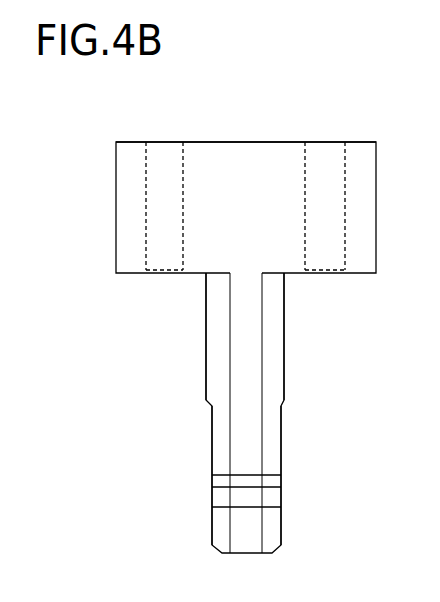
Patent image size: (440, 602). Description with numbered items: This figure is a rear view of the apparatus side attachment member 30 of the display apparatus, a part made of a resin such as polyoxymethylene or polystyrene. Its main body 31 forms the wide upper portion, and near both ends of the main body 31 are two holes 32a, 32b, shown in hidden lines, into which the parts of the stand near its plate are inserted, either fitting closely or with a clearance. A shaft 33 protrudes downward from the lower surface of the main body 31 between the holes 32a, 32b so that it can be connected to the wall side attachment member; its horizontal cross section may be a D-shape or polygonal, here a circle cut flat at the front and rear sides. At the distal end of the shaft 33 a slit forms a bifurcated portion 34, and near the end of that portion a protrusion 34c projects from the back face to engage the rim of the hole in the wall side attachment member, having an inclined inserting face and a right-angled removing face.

The apparatus side attachment member 30 is at (126, 133).
The main body 31 is at (243, 141).
The hole 32a is at (163, 258).
The hole 32b is at (324, 258).
The shaft 33 is at (287, 353).
The bifurcated portion 34 is at (281, 440).
The protrusion 34c is at (281, 487).